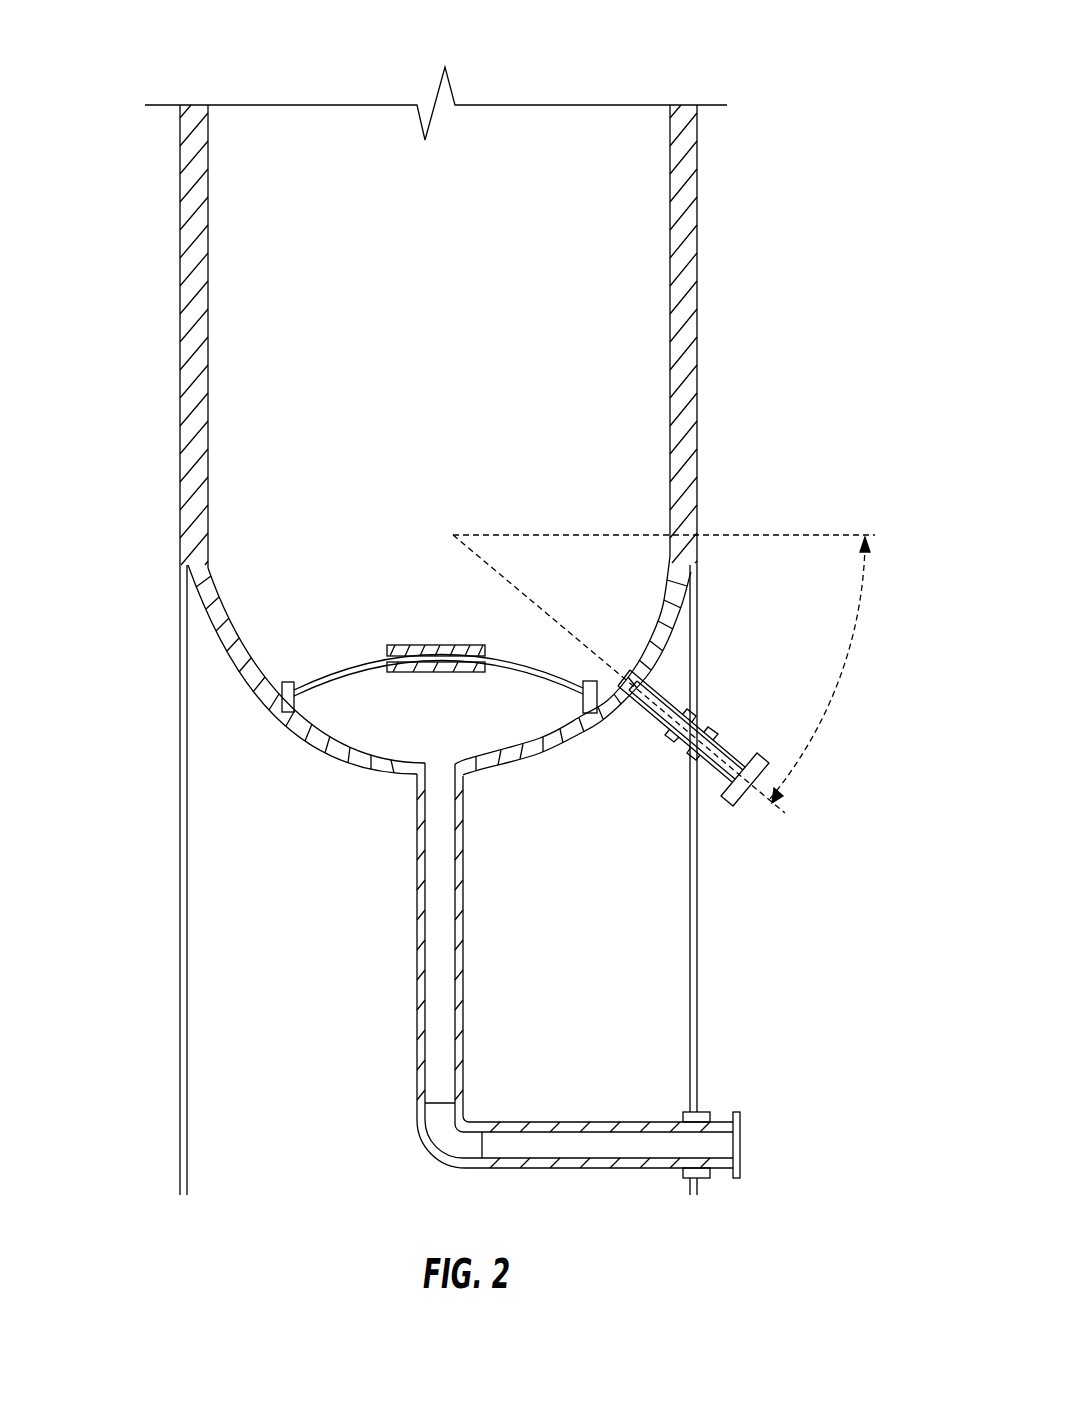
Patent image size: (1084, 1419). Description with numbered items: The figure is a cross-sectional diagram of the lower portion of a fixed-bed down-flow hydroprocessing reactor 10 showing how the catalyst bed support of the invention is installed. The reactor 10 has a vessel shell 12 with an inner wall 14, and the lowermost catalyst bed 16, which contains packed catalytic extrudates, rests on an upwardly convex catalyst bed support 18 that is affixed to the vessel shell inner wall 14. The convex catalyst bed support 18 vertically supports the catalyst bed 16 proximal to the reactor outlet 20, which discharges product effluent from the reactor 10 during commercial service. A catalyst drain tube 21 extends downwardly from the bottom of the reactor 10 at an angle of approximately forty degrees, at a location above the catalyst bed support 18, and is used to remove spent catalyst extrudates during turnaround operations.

The fixed-bed down-flow reactor 10 is at (160, 50).
The vessel shell 12 is at (180, 432).
The inner wall 14 is at (228, 655).
The catalyst bed 16 is at (235, 222).
The catalyst bed support 18 is at (360, 658).
The outlet 20 is at (417, 1000).
The catalyst drain tube 21 is at (722, 740).